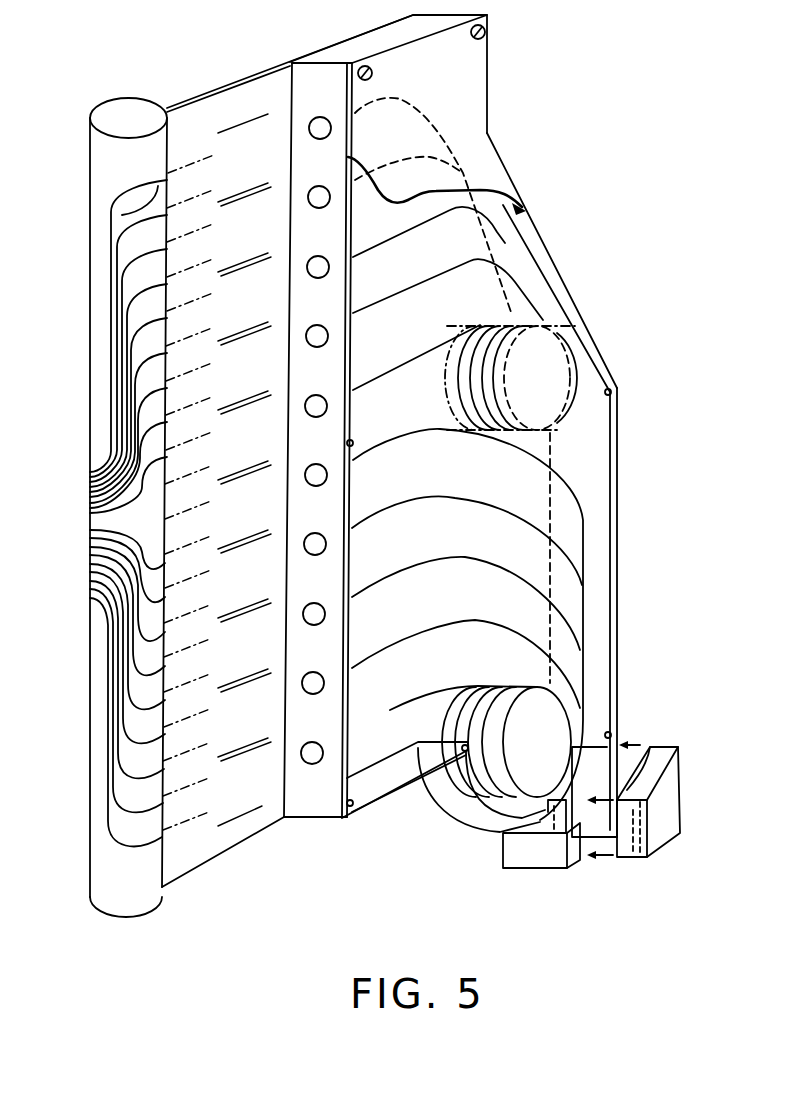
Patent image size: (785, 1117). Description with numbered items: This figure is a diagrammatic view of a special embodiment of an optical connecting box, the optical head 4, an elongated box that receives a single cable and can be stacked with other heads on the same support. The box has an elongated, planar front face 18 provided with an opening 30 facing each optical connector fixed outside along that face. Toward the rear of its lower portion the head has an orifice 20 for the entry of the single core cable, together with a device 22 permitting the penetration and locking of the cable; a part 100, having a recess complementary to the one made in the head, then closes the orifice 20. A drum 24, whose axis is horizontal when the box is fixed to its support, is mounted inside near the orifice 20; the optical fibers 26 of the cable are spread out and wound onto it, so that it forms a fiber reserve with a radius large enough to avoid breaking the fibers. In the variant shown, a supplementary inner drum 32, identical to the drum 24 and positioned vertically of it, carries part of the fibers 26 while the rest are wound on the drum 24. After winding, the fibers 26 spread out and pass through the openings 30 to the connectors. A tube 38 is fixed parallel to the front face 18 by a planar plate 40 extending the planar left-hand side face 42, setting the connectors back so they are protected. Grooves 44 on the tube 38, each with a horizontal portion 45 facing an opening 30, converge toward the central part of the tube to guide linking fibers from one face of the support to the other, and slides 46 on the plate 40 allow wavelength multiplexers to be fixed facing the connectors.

The optical head 4 is at (502, 58).
The front face 18 is at (306, 820).
The orifice 20 is at (588, 765).
The device permitting penetration and locking 22 is at (651, 736).
The drum 24 is at (537, 700).
The optical fibers 26 is at (437, 345).
The opening 30 is at (318, 482).
The supplementary inner drum 32 is at (548, 327).
The tube 38 is at (98, 143).
The planar plate 40 is at (210, 103).
The left-hand side face 42 is at (293, 55).
The grooves 44 is at (125, 282).
The horizontal portion 45 is at (122, 215).
The slides 46 is at (255, 258).
The part 100 is at (665, 830).